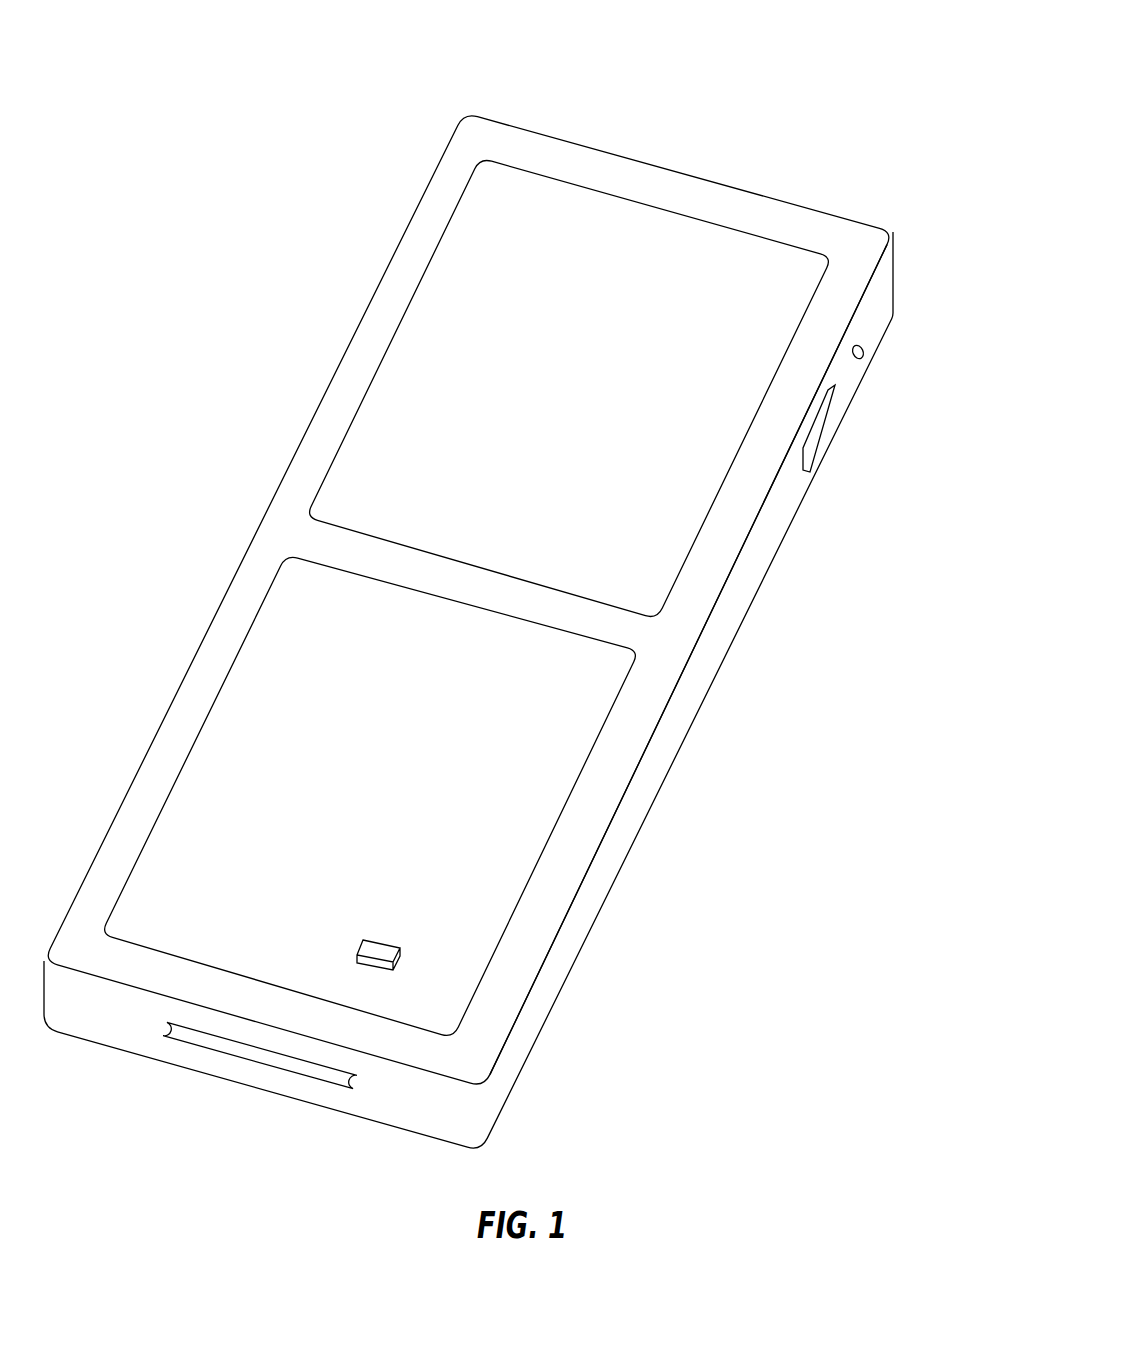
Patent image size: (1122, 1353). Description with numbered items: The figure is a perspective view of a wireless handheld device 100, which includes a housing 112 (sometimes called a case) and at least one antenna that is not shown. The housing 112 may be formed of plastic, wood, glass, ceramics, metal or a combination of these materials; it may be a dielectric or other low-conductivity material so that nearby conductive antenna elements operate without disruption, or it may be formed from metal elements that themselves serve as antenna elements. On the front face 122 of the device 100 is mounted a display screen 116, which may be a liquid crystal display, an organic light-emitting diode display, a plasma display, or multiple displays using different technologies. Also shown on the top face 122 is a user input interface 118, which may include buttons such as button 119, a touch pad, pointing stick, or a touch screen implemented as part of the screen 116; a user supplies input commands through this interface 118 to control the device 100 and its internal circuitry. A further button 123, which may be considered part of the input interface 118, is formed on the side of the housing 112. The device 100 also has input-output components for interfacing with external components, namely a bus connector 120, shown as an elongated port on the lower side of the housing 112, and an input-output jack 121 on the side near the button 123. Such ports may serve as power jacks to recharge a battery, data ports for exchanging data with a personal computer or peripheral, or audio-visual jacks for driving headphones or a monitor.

The wireless handheld device 100 is at (766, 78).
The housing 112 is at (866, 241).
The display screen 116 is at (373, 420).
The user input interface 118 is at (255, 668).
The button 119 is at (380, 950).
The bus connector 120 is at (255, 1057).
The input-output jack 121 is at (866, 354).
The front face 122 is at (557, 888).
The button 123 is at (818, 430).